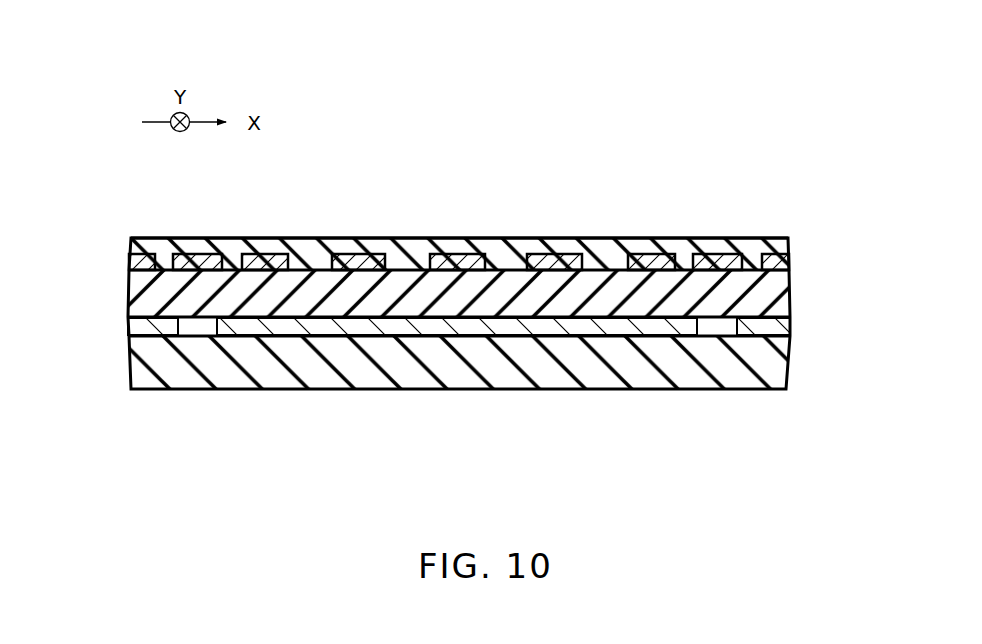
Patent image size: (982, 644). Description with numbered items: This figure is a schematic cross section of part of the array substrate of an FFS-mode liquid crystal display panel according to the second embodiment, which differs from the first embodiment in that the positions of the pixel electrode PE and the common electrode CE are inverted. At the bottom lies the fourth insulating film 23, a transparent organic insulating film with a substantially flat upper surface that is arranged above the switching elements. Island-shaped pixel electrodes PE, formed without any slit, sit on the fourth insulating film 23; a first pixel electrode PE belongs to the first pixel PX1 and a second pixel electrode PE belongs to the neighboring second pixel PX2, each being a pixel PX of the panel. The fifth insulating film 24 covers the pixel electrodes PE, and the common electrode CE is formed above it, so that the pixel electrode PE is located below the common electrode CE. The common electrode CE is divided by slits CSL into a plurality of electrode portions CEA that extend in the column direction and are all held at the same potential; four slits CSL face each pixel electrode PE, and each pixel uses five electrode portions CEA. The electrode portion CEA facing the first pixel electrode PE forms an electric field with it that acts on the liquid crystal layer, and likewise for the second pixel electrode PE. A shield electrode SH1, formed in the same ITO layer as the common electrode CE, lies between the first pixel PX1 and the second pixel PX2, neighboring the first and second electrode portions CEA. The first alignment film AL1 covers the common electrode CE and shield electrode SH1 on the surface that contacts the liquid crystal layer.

The common electrode CE is at (125, 251).
The electrode portion CEA is at (138, 253).
The shield electrode SH1 is at (197, 253).
The first alignment film AL1 is at (683, 243).
The fifth insulating film 24 is at (789, 287).
The fourth insulating film 23 is at (789, 348).
The pixel electrode PE is at (153, 325).
The slit CSL is at (301, 268).
The first pixel PX1 is at (357, 396).
The second pixel PX2 is at (171, 396).
The pixel PX is at (273, 498).